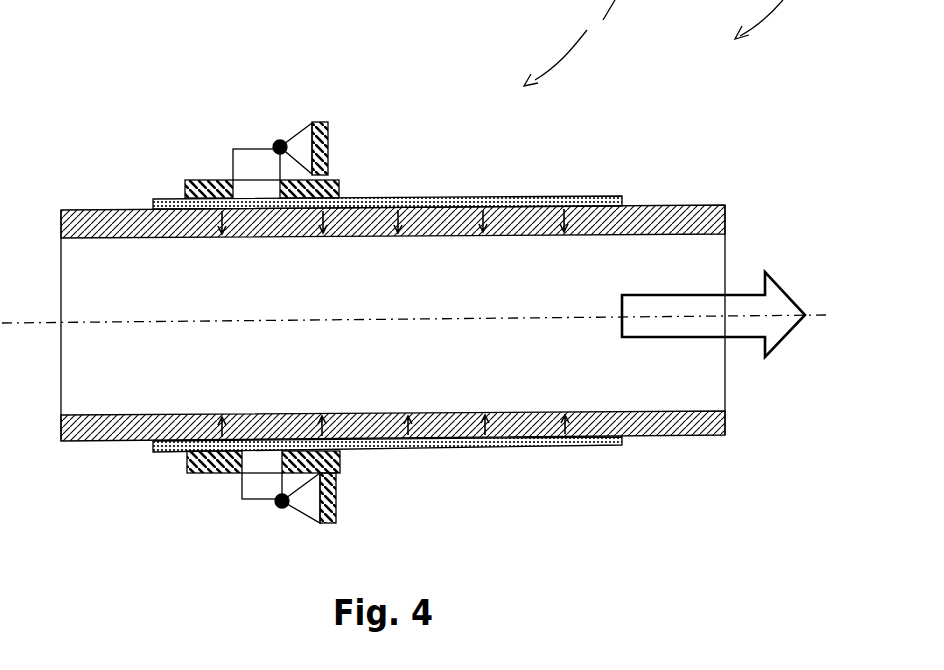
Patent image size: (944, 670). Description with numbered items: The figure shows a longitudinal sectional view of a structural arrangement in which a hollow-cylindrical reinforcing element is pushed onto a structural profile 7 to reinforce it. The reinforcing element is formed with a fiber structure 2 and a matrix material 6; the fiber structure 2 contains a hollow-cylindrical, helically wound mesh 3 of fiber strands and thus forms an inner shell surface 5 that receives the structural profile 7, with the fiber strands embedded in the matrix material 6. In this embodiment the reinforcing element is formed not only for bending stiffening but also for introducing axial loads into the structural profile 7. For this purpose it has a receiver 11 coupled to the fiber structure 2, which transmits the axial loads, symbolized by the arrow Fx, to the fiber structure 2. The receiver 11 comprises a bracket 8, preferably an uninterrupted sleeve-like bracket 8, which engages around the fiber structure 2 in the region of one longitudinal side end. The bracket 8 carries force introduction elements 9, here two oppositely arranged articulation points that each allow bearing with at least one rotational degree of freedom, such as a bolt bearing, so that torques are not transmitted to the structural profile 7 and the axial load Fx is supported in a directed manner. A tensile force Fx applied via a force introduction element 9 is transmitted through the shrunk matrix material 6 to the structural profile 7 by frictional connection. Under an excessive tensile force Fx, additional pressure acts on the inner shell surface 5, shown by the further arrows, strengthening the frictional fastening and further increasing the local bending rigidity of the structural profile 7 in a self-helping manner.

The fiber structure 2 is at (414, 272).
The mesh 3 is at (568, 197).
The inner shell surface 5 is at (438, 208).
The matrix material 6 is at (182, 200).
The structural profile 7 is at (700, 210).
The bracket 8 is at (340, 182).
The force introduction element 9 is at (272, 152).
The receiver 11 is at (262, 304).
The axial load Fx is at (740, 303).